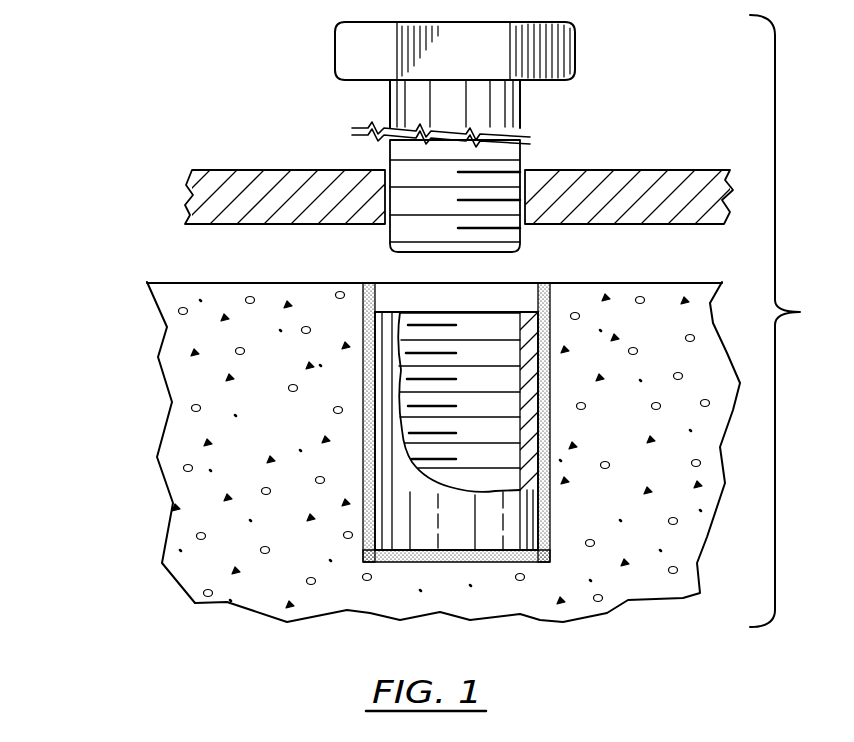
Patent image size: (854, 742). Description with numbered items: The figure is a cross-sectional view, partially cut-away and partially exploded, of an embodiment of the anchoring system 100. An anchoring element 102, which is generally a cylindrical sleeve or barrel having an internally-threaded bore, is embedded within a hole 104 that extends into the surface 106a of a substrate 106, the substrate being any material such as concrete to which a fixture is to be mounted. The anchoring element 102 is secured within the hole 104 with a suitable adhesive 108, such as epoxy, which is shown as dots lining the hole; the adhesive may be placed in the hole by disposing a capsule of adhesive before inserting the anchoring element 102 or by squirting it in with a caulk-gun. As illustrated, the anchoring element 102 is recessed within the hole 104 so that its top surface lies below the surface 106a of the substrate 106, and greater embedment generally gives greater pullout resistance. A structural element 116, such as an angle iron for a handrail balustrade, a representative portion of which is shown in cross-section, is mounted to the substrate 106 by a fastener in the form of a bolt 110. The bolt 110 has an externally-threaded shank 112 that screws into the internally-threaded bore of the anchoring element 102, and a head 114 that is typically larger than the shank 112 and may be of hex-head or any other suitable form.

The anchoring system 100 is at (163, 89).
The anchoring element 102 is at (392, 314).
The hole 104 is at (541, 287).
The substrate 106 is at (280, 432).
The surface of the substrate 106a is at (213, 282).
The adhesive 108 is at (548, 522).
The bolt 110 is at (520, 116).
The externally-threaded shank 112 is at (390, 151).
The head 114 is at (335, 52).
The structural element 116 is at (248, 169).